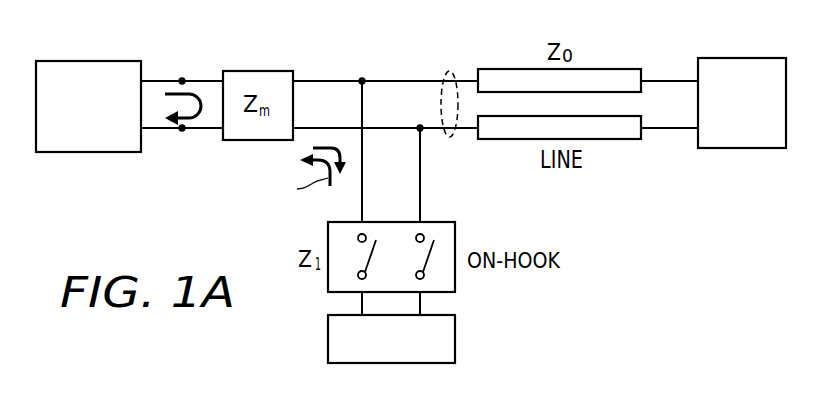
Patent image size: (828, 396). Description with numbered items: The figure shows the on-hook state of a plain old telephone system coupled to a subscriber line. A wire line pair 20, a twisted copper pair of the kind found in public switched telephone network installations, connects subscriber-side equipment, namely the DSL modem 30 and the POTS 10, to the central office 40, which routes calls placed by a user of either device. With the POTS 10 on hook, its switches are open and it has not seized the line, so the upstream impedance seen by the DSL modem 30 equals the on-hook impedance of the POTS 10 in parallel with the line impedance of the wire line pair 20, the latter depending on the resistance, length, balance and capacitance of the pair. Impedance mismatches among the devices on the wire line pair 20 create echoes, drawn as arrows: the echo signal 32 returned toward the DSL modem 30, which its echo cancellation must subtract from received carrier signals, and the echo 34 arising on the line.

The POTS 10 is at (328, 340).
The wire line pair 20 is at (451, 72).
The DSL modem 30 is at (89, 153).
The echo signal 32 is at (203, 98).
The echo 34 is at (285, 229).
The central office 40 is at (740, 148).